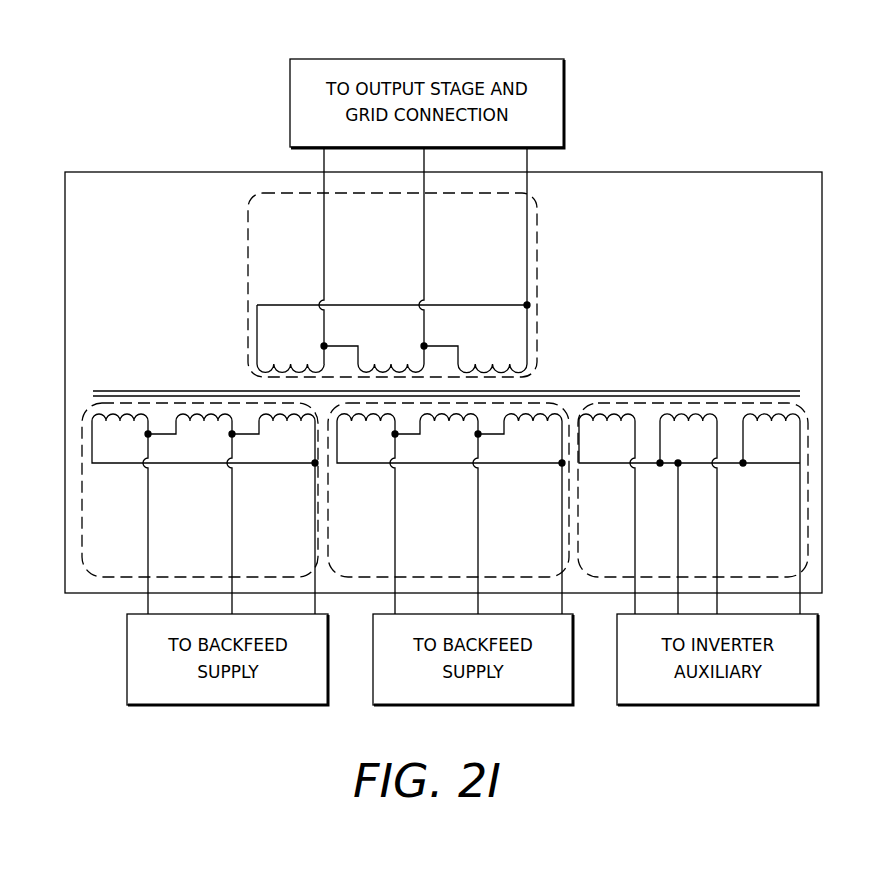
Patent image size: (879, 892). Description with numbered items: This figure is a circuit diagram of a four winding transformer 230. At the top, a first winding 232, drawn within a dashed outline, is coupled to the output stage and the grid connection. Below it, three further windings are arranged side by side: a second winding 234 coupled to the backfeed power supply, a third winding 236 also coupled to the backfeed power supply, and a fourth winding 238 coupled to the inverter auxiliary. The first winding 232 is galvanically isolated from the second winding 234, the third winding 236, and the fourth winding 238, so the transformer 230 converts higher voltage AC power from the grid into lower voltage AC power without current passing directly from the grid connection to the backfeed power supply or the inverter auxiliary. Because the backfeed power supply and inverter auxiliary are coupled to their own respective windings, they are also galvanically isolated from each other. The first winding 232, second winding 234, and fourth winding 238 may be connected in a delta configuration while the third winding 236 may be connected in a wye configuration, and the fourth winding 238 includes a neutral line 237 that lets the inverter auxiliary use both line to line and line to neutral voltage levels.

The four winding transformer 230 is at (765, 172).
The first winding 232 is at (537, 243).
The second winding 234 is at (87, 418).
The third winding 236 is at (552, 405).
The neutral line 237 is at (680, 518).
The fourth winding 238 is at (725, 482).